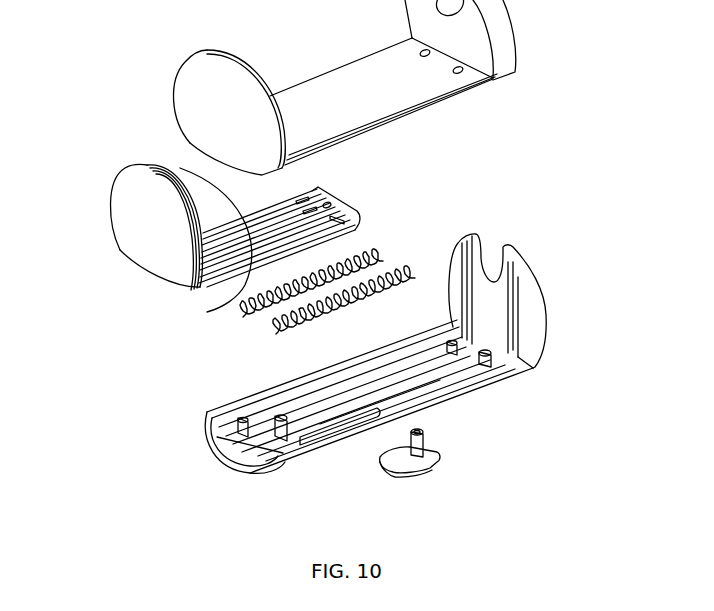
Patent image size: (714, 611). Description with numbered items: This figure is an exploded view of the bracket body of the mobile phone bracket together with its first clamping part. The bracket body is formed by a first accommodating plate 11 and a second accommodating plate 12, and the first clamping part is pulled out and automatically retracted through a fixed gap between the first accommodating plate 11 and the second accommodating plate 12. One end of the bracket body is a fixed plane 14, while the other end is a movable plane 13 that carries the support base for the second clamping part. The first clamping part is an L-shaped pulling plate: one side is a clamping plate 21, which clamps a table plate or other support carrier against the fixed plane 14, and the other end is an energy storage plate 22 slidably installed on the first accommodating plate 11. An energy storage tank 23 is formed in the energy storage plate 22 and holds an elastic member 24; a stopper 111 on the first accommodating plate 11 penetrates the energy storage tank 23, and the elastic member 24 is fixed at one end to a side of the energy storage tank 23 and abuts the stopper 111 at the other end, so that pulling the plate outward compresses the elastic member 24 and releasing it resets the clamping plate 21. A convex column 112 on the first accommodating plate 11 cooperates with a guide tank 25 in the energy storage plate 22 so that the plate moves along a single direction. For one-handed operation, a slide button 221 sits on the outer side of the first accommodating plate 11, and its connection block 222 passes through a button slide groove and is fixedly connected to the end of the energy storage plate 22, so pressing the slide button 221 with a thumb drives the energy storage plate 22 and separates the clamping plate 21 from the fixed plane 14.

The first accommodating plate 11 is at (406, 359).
The second accommodating plate 12 is at (308, 87).
The movable plane 13 is at (540, 300).
The fixed plane 14 is at (200, 97).
The clamping plate 21 is at (133, 230).
The energy storage plate 22 is at (299, 223).
The energy storage tank 23 is at (196, 235).
The elastic member 24 is at (373, 247).
The guide tank 25 is at (253, 233).
The stopper 111 is at (278, 418).
The convex column 112 is at (273, 407).
The slide button 221 is at (456, 475).
The connection block 222 is at (423, 443).